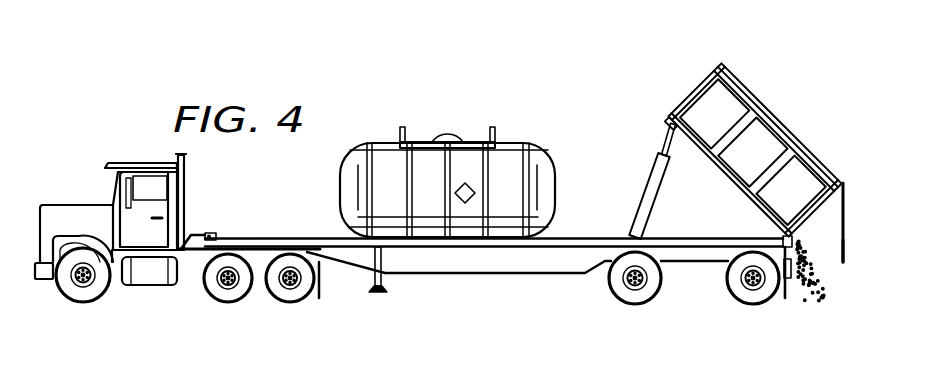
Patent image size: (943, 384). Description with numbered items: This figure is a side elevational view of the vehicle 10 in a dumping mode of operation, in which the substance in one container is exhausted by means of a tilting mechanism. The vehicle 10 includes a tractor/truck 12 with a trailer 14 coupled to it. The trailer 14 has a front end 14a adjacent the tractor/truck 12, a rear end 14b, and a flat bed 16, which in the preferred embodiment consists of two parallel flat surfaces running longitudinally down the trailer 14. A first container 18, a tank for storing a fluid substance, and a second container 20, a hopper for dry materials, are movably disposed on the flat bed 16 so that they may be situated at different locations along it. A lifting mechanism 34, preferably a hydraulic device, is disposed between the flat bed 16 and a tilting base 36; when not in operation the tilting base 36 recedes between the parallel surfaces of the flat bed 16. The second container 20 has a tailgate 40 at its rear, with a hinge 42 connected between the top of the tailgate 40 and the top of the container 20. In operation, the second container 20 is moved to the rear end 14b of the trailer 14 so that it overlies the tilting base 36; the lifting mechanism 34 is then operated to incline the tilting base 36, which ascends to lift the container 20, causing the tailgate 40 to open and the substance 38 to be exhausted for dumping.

The vehicle 10 is at (80, 120).
The tractor/truck 12 is at (73, 204).
The trailer 14 is at (551, 275).
The front end 14a is at (213, 231).
The rear end 14b is at (762, 236).
The flat bed 16 is at (257, 234).
The first container 18 is at (383, 142).
The second container 20 is at (760, 100).
The lifting mechanism 34 is at (644, 196).
The tilting base 36 is at (703, 167).
The substance 38 is at (810, 300).
The tailgate 40 is at (845, 248).
The hinge 42 is at (842, 183).